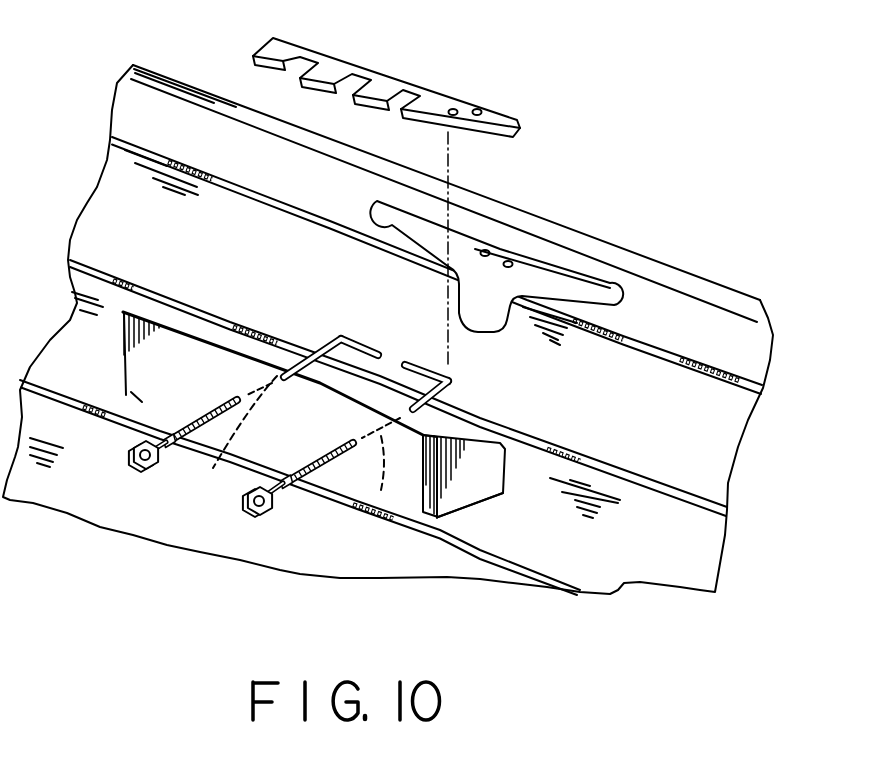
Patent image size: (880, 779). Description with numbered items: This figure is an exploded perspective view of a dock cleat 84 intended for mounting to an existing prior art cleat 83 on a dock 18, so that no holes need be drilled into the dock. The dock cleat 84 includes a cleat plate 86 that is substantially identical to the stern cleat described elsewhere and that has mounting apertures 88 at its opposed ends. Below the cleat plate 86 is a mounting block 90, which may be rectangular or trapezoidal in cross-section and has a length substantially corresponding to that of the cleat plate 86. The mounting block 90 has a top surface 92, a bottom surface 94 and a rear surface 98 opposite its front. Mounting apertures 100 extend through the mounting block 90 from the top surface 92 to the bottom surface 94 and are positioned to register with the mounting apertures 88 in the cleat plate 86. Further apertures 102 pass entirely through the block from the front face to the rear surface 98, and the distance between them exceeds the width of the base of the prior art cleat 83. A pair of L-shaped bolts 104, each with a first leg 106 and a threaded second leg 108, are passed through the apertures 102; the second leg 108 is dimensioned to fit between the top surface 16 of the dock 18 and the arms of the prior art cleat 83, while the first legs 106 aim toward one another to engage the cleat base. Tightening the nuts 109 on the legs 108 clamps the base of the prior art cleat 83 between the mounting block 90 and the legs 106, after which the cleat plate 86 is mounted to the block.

The top surface of the dock 16 is at (703, 435).
The dock 18 is at (676, 268).
The prior art mounting cleat 83 is at (553, 267).
The dock cleat 84 is at (522, 191).
The cleat plate 86 is at (403, 81).
The mounting apertures 88 is at (474, 108).
The mounting block 90 is at (488, 502).
The top surface 92 is at (163, 324).
The bottom surface 94 is at (452, 515).
The rear surface 98 is at (143, 395).
The mounting apertures 100 is at (170, 318).
The apertures 102 is at (221, 456).
The L-shaped bolts 104 is at (330, 336).
The first leg 106 is at (420, 363).
The second leg 108 is at (176, 432).
The nut 109 is at (147, 469).